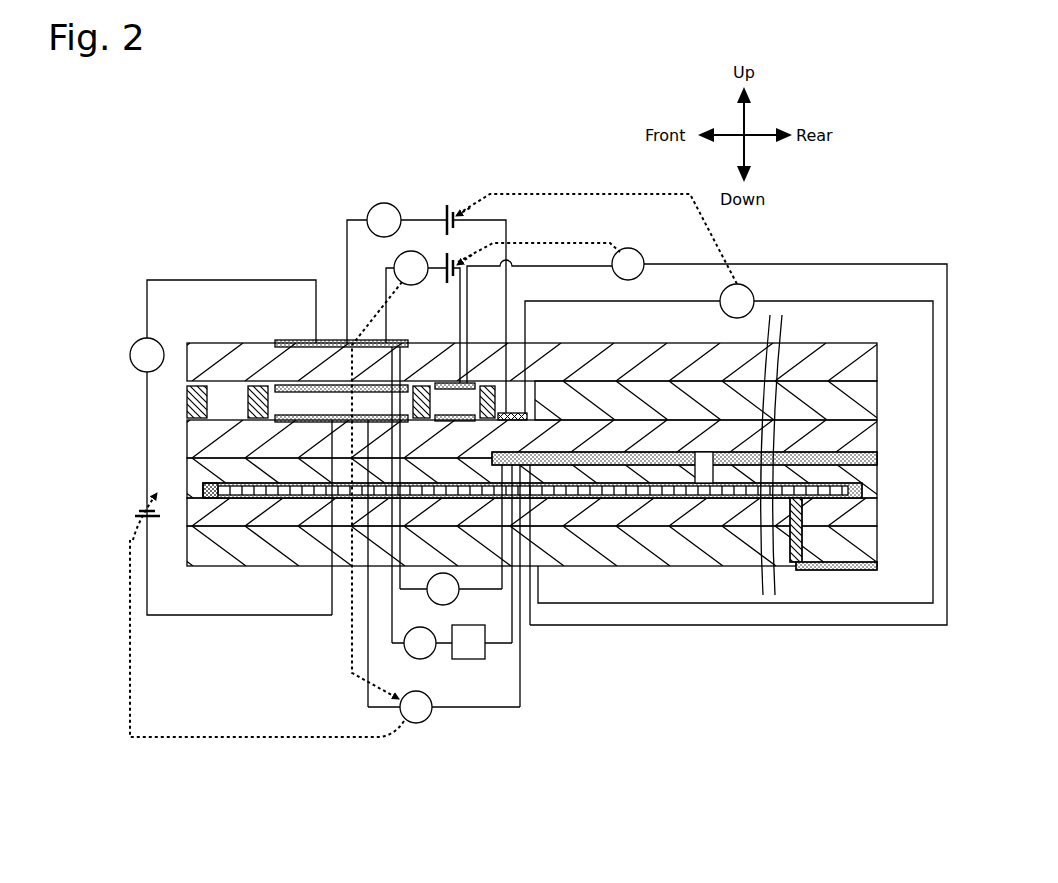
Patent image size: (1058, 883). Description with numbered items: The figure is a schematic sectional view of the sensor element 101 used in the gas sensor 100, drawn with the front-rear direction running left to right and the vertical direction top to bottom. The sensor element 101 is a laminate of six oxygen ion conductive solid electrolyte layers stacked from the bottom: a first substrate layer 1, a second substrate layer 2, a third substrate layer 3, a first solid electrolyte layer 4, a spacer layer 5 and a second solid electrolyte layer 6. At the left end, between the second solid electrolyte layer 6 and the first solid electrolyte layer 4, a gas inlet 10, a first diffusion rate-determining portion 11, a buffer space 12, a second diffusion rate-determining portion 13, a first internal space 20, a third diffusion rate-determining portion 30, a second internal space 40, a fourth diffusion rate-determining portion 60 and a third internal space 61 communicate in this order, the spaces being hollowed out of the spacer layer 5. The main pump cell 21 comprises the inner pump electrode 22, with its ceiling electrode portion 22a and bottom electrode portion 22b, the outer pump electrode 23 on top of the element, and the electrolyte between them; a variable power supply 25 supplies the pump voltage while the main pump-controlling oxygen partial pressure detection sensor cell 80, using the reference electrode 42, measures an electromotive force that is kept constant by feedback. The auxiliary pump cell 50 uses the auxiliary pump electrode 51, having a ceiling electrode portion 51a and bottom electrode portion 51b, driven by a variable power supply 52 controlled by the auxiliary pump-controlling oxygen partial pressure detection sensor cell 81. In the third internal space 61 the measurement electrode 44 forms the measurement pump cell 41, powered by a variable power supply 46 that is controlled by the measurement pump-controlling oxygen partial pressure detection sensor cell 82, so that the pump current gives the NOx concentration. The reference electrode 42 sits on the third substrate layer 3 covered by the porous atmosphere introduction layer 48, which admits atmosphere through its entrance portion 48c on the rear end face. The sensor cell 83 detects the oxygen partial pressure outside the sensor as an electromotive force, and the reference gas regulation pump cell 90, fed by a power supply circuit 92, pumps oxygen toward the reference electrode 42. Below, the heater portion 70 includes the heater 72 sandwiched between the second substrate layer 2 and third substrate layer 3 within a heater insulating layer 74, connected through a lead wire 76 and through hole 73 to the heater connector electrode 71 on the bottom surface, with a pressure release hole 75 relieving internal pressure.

The gas sensor 100 is at (860, 142).
The sensor element 101 is at (196, 324).
The first substrate layer 1 is at (879, 539).
The second substrate layer 2 is at (879, 511).
The third substrate layer 3 is at (187, 472).
The first solid electrolyte layer 4 is at (187, 439).
The spacer layer 5 is at (879, 384).
The second solid electrolyte layer 6 is at (879, 357).
The gas inlet 10 is at (183, 403).
The first diffusion rate-determining portion 11 is at (205, 384).
The buffer space 12 is at (246, 390).
The second diffusion rate-determining portion 13 is at (262, 386).
The first internal space 20 is at (378, 398).
The main pump cell 21 is at (222, 280).
The inner pump electrode 22 is at (326, 383).
The ceiling electrode portion 22a is at (356, 340).
The bottom electrode portion 22b is at (327, 412).
The outer pump electrode 23 is at (283, 340).
The variable power supply 25 is at (135, 513).
The third diffusion rate-determining portion 30 is at (420, 386).
The second internal space 40 is at (432, 383).
The measurement pump cell 41 is at (370, 210).
The reference electrode 42 is at (525, 462).
The measurement electrode 44 is at (512, 421).
The variable power supply 46 is at (451, 206).
The atmosphere introduction layer 48 is at (858, 452).
The entrance portion 48c is at (878, 457).
The auxiliary pump cell 50 is at (394, 262).
The auxiliary pump electrode 51 is at (448, 383).
The ceiling electrode portion 51a is at (470, 385).
The bottom electrode portion 51b is at (455, 421).
The variable power supply 52 is at (453, 284).
The fourth diffusion rate-determining portion 60 is at (488, 388).
The third internal space 61 is at (533, 402).
The heater portion 70 is at (868, 488).
The heater connector electrode 71 is at (879, 567).
The heater 72 is at (232, 484).
The through hole 73 is at (802, 530).
The heater insulating layer 74 is at (212, 492).
The pressure release hole 75 is at (711, 466).
The lead wire 76 is at (600, 494).
The main pump-controlling oxygen partial pressure detection sensor cell 80 is at (449, 718).
The auxiliary pump-controlling oxygen partial pressure detection sensor cell 81 is at (788, 263).
The measurement pump-controlling oxygen partial pressure detection sensor cell 82 is at (791, 300).
The sensor cell 83 is at (460, 598).
The reference gas regulation pump cell 90 is at (511, 660).
The power supply circuit 92 is at (470, 660).